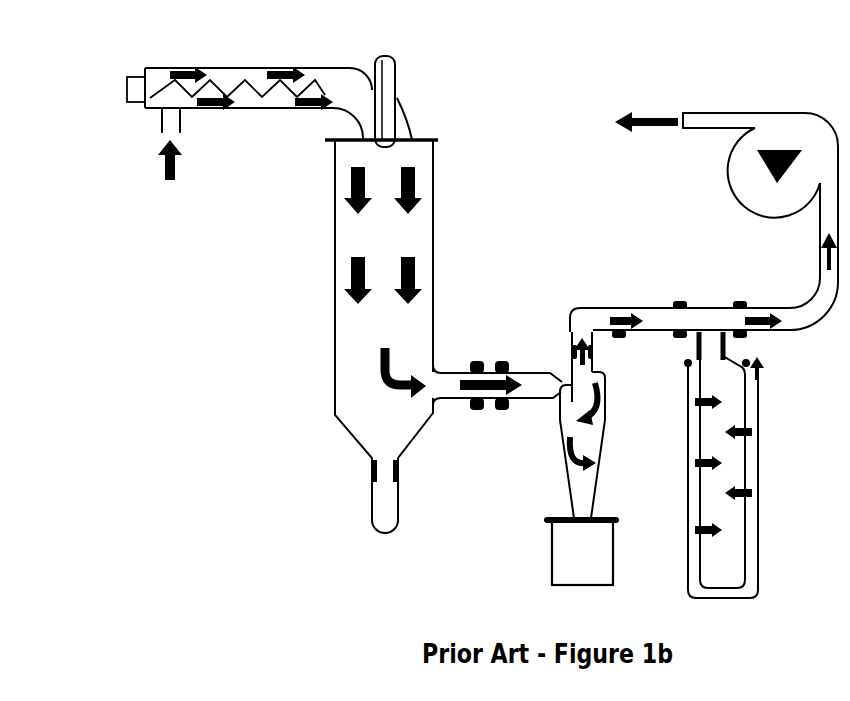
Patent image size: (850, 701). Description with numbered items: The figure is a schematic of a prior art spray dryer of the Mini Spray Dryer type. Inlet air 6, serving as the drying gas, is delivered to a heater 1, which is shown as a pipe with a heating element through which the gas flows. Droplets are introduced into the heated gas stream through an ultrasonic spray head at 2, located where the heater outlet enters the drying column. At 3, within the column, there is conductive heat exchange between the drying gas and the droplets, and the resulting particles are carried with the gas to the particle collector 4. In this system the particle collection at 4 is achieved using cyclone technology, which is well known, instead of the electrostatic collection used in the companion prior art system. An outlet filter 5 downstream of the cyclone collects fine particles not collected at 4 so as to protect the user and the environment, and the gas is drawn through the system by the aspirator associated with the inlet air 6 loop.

The heater 1 is at (269, 90).
The ultrasonic spray head 2 is at (425, 101).
The conductive heat exchange region 3 is at (417, 336).
The particle collector 4 is at (555, 458).
The outlet filter 5 is at (754, 465).
The inlet air 6 is at (704, 189).